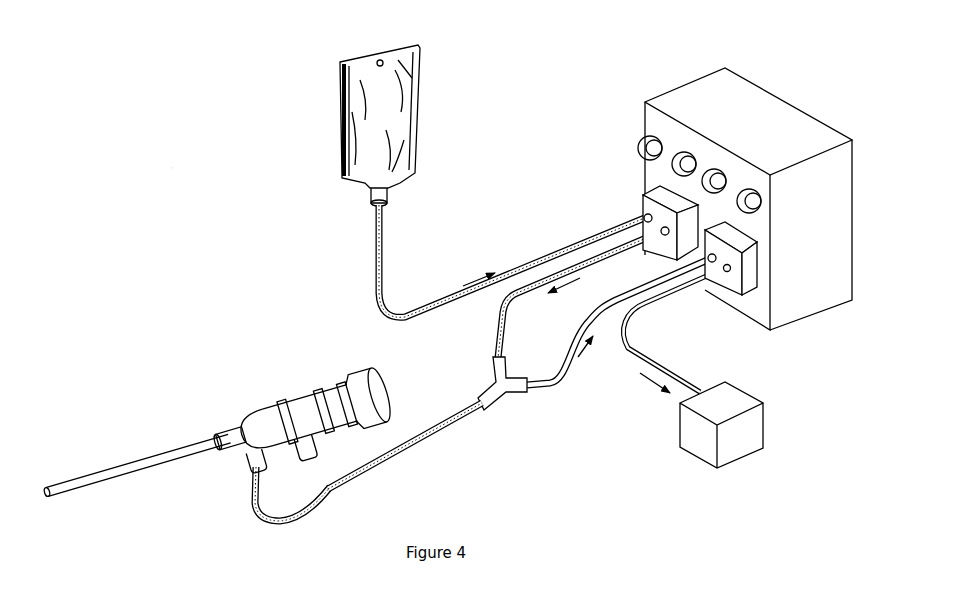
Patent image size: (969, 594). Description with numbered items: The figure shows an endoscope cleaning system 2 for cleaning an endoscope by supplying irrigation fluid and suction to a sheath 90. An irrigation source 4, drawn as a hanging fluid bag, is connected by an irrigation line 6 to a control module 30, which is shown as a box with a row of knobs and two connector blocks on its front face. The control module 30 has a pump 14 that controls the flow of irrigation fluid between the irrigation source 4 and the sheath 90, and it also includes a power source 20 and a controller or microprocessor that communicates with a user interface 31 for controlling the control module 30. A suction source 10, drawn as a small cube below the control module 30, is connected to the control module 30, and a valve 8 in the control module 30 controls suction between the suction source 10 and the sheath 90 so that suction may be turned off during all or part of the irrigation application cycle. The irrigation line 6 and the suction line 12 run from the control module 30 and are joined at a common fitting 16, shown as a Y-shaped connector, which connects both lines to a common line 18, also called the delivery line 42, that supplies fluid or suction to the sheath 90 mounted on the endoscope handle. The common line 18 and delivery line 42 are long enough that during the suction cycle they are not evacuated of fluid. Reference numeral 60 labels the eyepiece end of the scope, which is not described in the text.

The endoscope cleaning system 2 is at (172, 168).
The irrigation source 4 is at (334, 75).
The irrigation line 6 is at (592, 246).
The valve 8 is at (752, 263).
The suction source 10 is at (743, 407).
The suction line 12 is at (567, 378).
The pump 14 is at (771, 84).
The common fitting 16 is at (504, 403).
The common line 18 is at (400, 448).
The power source 20 is at (843, 128).
The control module 30 is at (678, 82).
The user interface 31 is at (665, 125).
The delivery line 42 is at (405, 446).
The eyepiece 60 is at (330, 393).
The sheath 90 is at (258, 420).